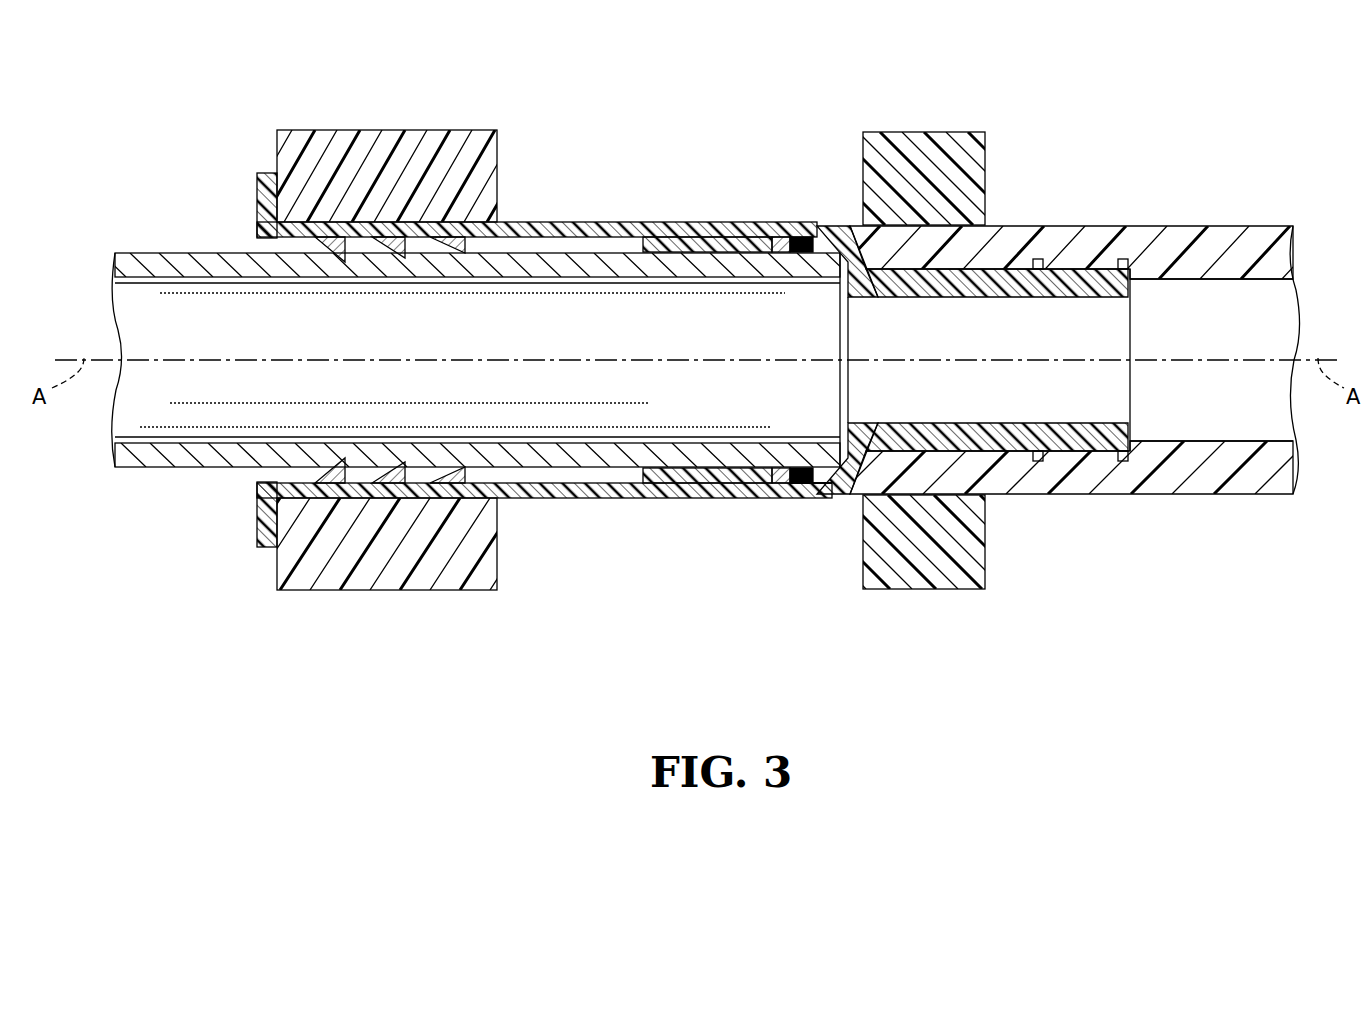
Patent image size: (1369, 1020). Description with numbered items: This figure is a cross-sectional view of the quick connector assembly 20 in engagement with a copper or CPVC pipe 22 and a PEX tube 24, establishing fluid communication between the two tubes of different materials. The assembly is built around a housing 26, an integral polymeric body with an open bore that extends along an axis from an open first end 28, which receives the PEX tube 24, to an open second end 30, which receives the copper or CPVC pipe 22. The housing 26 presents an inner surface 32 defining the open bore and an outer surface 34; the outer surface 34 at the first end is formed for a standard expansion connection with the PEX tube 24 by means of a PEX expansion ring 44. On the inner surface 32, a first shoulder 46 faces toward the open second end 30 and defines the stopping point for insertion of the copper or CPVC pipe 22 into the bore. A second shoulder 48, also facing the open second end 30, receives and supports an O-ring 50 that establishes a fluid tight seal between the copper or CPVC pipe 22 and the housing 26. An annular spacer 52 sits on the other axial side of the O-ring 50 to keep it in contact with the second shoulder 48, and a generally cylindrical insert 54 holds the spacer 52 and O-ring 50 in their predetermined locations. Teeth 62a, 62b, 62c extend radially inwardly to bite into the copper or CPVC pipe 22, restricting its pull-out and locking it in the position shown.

The quick connector assembly 20 is at (687, 168).
The copper or CPVC pipe 22 is at (130, 470).
The PEX tube 24 is at (1170, 242).
The housing 26 is at (546, 222).
The open first end 28 is at (1130, 405).
The open second end 30 is at (262, 215).
The inner surface 32 is at (1056, 318).
The outer surface 34 is at (802, 498).
The PEX expansion ring 44 is at (925, 132).
The first shoulder 46 is at (820, 228).
The second shoulder 48 is at (800, 236).
The O-ring 50 is at (803, 486).
The annular spacer 52 is at (782, 484).
The insert 54 is at (668, 480).
The tooth 62a is at (340, 235).
The tooth 62b is at (398, 235).
The tooth 62c is at (458, 235).